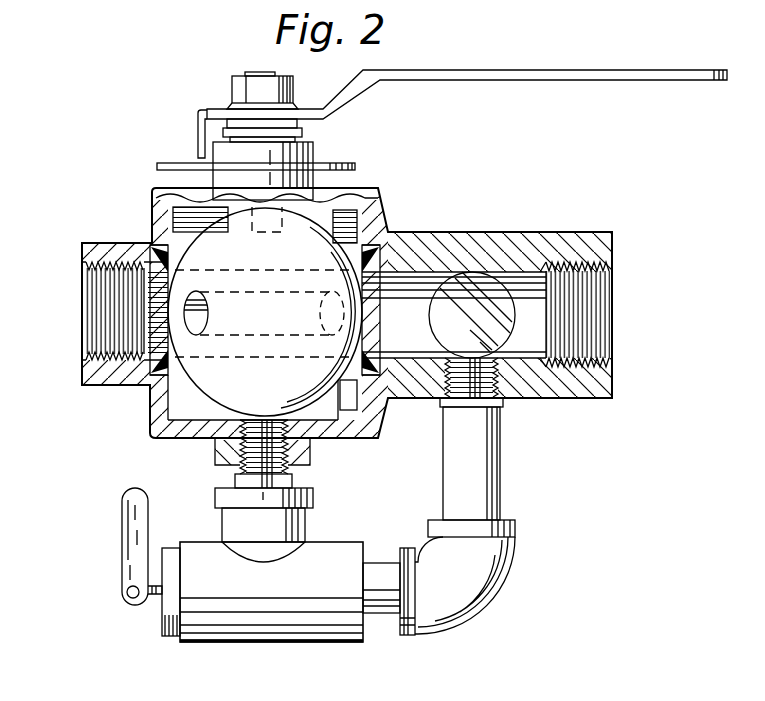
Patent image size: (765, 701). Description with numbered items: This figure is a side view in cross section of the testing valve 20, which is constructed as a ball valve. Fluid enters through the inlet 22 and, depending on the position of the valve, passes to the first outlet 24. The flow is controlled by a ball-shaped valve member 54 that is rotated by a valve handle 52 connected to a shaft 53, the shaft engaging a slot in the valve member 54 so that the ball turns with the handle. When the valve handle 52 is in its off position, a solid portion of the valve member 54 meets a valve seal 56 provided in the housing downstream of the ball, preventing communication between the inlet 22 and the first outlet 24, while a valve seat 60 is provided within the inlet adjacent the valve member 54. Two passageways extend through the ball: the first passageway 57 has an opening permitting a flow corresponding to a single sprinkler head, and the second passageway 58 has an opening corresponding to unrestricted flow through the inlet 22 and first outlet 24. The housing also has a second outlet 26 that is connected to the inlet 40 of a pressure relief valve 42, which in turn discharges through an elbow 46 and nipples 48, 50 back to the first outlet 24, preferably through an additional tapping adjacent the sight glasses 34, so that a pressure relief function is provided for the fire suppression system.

The valve 20 is at (437, 232).
The inlet 22 is at (105, 243).
The first outlet 24 is at (600, 232).
The second outlet 26 is at (312, 457).
The sight glasses 34 is at (492, 274).
The inlet of pressure relief valve 40 is at (315, 497).
The pressure relief valve 42 is at (265, 641).
The elbow 46 is at (480, 607).
The nipple 48 is at (385, 615).
The nipple 50 is at (503, 465).
The valve handle 52 is at (620, 70).
The shaft 53 is at (350, 192).
The valve member 54 is at (210, 392).
The valve seal 56 is at (358, 215).
The first passageway 57 is at (196, 313).
The second passageway 58 is at (205, 360).
The valve seat 60 is at (152, 380).